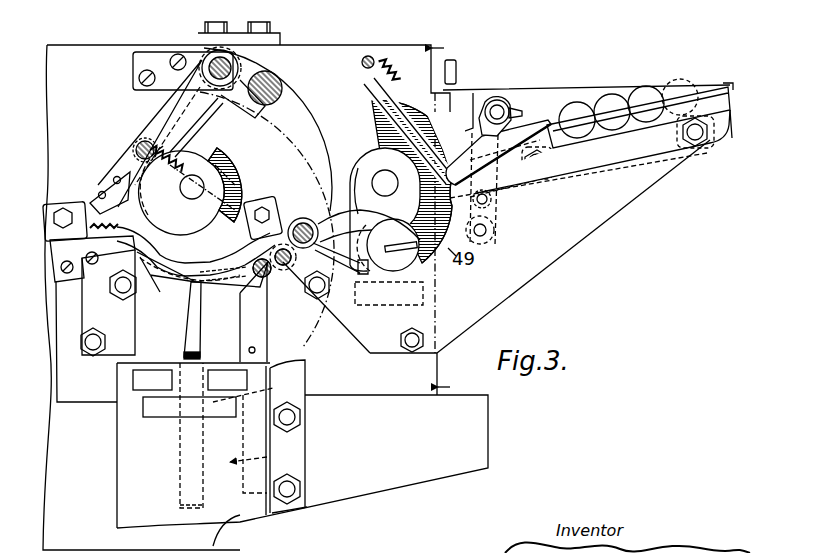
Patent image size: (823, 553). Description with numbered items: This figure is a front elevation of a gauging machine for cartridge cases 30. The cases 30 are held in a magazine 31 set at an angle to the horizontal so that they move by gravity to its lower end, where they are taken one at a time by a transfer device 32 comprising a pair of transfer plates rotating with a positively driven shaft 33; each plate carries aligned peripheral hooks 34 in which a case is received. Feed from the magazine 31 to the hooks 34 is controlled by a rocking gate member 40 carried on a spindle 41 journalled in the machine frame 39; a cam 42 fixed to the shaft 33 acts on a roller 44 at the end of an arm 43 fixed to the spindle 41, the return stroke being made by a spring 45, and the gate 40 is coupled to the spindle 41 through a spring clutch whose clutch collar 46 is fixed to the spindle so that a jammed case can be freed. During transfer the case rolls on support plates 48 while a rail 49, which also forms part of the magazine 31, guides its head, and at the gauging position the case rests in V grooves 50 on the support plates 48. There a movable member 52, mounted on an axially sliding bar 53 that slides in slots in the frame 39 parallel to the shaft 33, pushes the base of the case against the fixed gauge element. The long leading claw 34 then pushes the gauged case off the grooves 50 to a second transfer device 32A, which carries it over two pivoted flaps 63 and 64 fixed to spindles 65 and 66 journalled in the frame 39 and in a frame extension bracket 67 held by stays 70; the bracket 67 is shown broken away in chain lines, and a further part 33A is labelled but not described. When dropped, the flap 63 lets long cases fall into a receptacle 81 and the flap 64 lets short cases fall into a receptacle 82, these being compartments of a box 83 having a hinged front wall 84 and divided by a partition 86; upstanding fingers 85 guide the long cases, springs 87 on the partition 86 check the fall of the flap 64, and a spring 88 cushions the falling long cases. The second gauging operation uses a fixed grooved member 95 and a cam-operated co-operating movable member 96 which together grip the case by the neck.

The cartridge cases 30 is at (590, 100).
The magazine 31 is at (650, 100).
The transfer device 32 is at (357, 162).
The second transfer device 32A is at (167, 218).
The shaft 33 is at (387, 180).
The gear segment 33A is at (193, 186).
The peripheral hooks 34 is at (384, 218).
The machine frame 39 is at (331, 57).
The rocking catch or gate member 40 is at (520, 101).
The spindle 41 is at (497, 100).
The cam 42 is at (380, 112).
The arm 43 is at (492, 201).
The roller 44 is at (495, 232).
The spring 45 is at (385, 82).
The clutch collar 46 is at (509, 103).
The support plates 48 is at (595, 228).
The rail 49 is at (723, 88).
The V grooves 50 is at (310, 290).
The movable member 52 is at (307, 221).
The axially sliding bar 53 is at (386, 305).
The pivoted flap 63 is at (222, 288).
The pivoted flap 64 is at (160, 288).
The spindle 65 is at (283, 236).
The spindle 66 is at (264, 278).
The frame extension bracket 67 is at (311, 106).
The stays 70 is at (276, 86).
The receptacle 81 is at (268, 453).
The receptacle 82 is at (150, 455).
The box 83 is at (117, 495).
The hinged front wall 84 is at (168, 508).
The upstanding plates or fingers 85 is at (258, 333).
The partition 86 is at (216, 531).
The springs 87 is at (191, 343).
The spring 88 is at (268, 383).
The fixed grooved member 95 is at (108, 258).
The co-operating movable member 96 is at (97, 216).